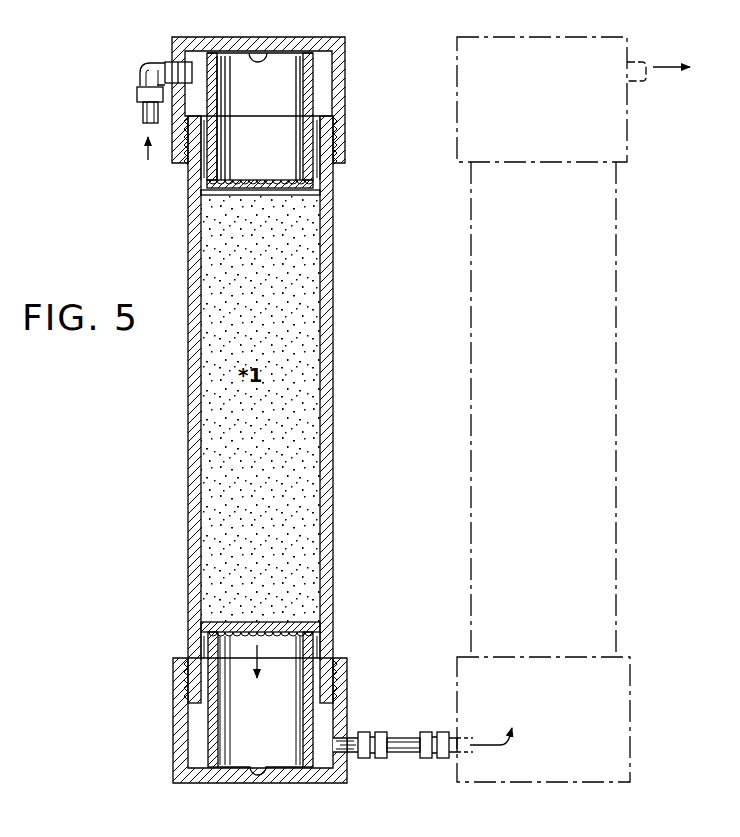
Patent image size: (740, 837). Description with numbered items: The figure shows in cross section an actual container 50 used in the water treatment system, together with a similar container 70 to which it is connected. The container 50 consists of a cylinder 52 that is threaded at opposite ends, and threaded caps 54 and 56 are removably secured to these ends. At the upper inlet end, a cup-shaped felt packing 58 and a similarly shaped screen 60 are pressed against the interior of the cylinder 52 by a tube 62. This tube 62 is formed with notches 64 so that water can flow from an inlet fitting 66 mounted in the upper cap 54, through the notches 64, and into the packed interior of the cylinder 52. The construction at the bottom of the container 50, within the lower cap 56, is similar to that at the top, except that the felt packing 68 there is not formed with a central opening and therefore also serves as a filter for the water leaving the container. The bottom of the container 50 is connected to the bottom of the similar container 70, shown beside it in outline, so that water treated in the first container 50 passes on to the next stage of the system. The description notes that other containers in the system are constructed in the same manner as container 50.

The container 50 is at (325, 338).
The cylinder 52 is at (194, 507).
The threaded cap 54 is at (341, 60).
The threaded cap 56 is at (341, 662).
The cup-shaped felt packing 58 is at (312, 190).
The screen 60 is at (253, 181).
The tube 62 is at (242, 63).
The notches 64 is at (258, 60).
The inlet fitting 66 is at (150, 71).
The felt packing 68 is at (300, 620).
The similar container 70 is at (616, 447).